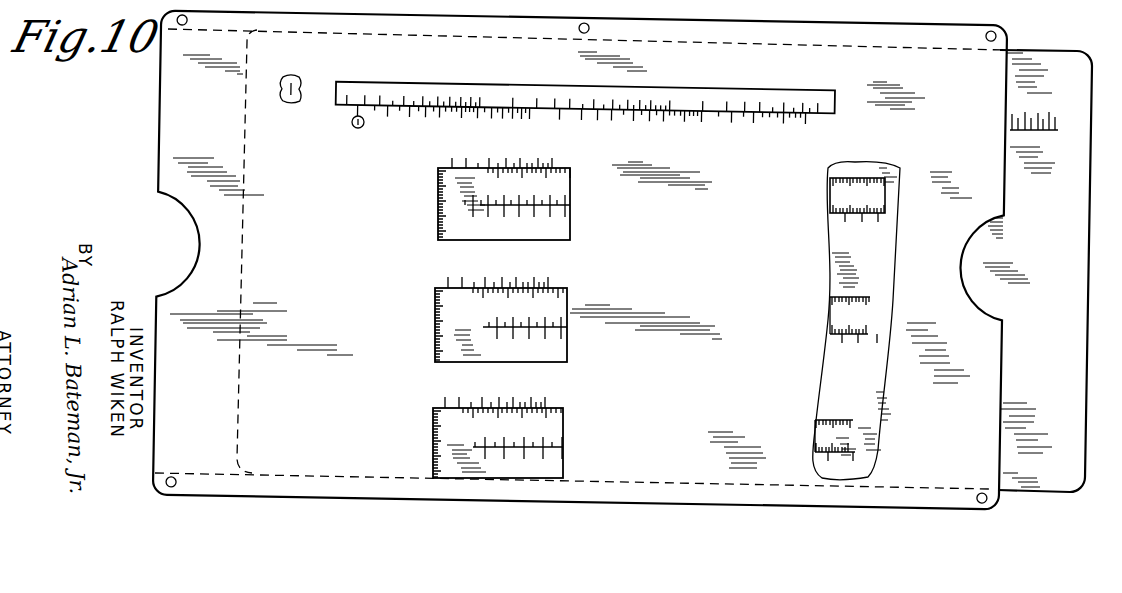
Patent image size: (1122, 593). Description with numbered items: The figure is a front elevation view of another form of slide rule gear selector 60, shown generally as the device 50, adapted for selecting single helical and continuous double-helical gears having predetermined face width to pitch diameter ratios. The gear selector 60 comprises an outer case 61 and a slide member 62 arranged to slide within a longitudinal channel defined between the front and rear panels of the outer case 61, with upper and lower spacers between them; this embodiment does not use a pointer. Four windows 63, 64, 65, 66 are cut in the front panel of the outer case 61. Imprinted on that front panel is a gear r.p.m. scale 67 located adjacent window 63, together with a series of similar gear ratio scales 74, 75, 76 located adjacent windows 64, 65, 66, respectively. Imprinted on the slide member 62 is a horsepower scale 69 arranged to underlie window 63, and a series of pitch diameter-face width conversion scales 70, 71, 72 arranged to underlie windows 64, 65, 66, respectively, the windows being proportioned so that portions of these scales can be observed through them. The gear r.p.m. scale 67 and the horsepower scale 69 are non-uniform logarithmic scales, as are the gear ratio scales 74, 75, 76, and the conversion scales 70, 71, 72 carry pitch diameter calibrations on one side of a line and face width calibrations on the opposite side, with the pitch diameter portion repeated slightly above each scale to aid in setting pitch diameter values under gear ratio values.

The gear calculator slide rule 50 is at (615, 254).
The gear selector 60 is at (163, 128).
The outer case 61 is at (878, 6).
The slide member 62 is at (1074, 60).
The window 63 is at (412, 82).
The window 64 is at (570, 204).
The window 65 is at (567, 341).
The window 66 is at (563, 459).
The gear r.p.m. scale 67 is at (351, 122).
The horsepower scale 69 is at (1058, 122).
The pitch diameter-face width conversion scale 70 is at (885, 210).
The pitch diameter-face width conversion scale 71 is at (869, 306).
The pitch diameter-face width conversion scale 72 is at (850, 448).
The gear ratio scale 74 is at (549, 161).
The gear ratio scale 75 is at (548, 278).
The gear ratio scale 76 is at (546, 400).